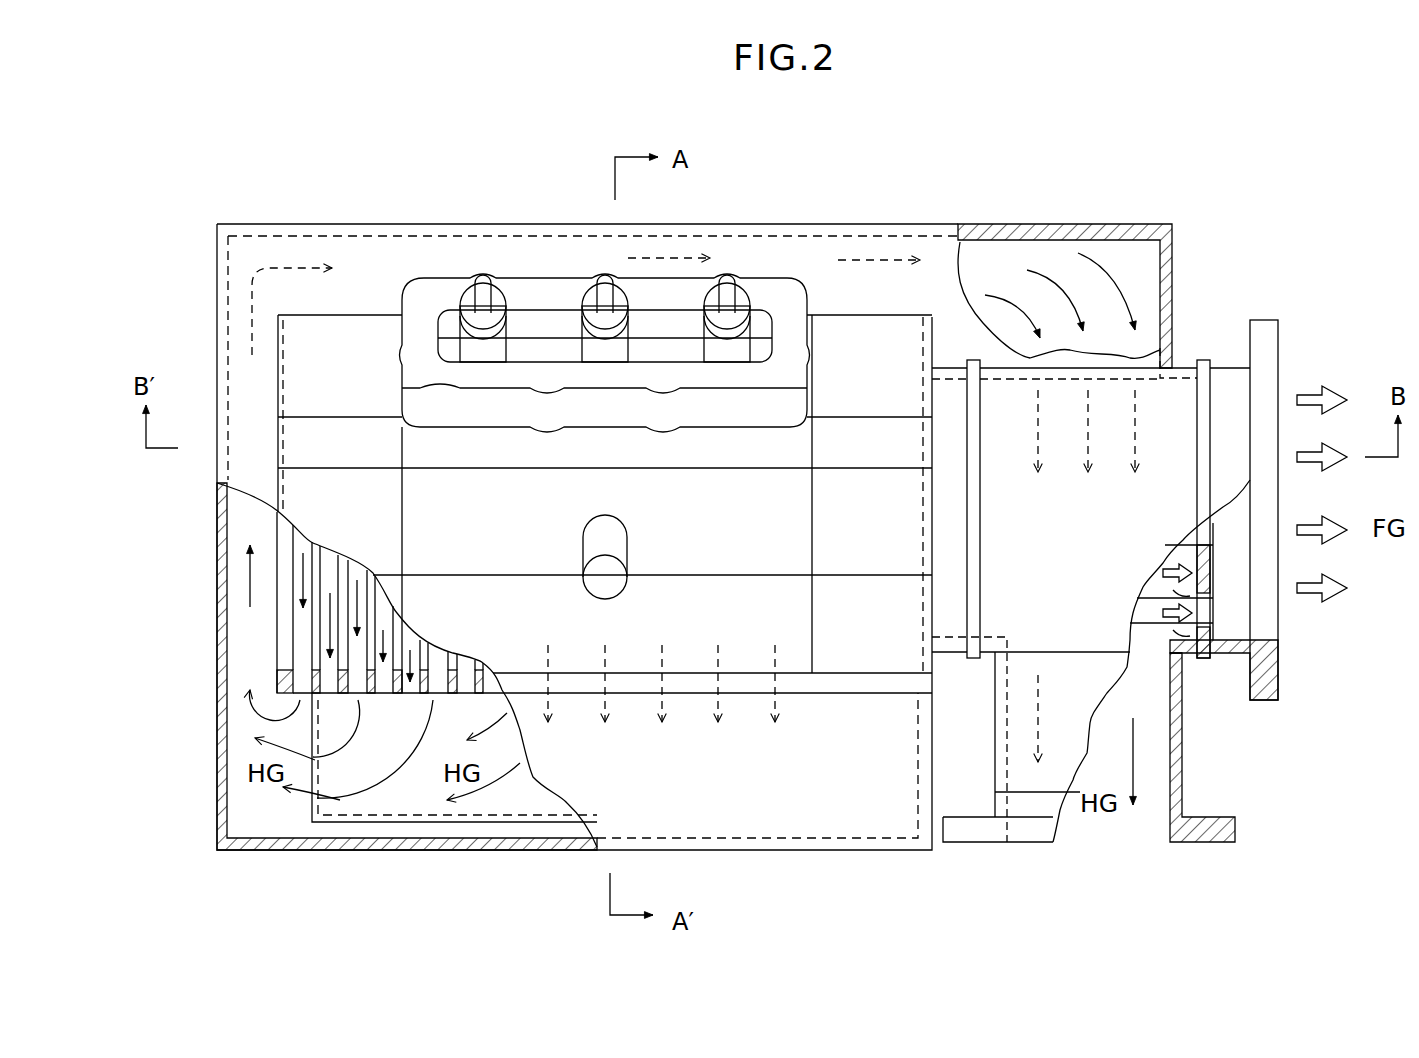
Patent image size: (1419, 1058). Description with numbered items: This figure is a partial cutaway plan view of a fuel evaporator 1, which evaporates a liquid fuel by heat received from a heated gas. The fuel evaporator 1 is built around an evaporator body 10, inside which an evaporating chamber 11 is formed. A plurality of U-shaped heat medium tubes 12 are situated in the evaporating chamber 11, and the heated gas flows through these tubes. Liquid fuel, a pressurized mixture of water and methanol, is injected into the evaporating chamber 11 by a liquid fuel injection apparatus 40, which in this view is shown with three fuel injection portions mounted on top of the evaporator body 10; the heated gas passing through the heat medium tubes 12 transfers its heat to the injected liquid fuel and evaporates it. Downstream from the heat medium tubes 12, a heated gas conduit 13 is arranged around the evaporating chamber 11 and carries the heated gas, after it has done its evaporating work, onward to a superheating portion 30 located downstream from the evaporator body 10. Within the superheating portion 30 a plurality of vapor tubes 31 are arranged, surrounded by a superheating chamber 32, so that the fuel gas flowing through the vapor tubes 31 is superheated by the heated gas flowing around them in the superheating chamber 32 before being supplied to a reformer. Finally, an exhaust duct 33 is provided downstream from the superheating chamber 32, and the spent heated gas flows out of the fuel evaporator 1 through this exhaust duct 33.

The fuel evaporator 1 is at (942, 203).
The evaporator body 10 is at (250, 672).
The evaporating chamber 11 is at (290, 535).
The heat medium tubes 12 is at (275, 640).
The heated gas conduit 13 is at (1123, 260).
The superheating portion 30 is at (1220, 333).
The vapor tubes 31 is at (1205, 627).
The superheating chamber 32 is at (1153, 640).
The exhaust duct 33 is at (1182, 760).
The liquid fuel injection apparatus 40 is at (708, 303).